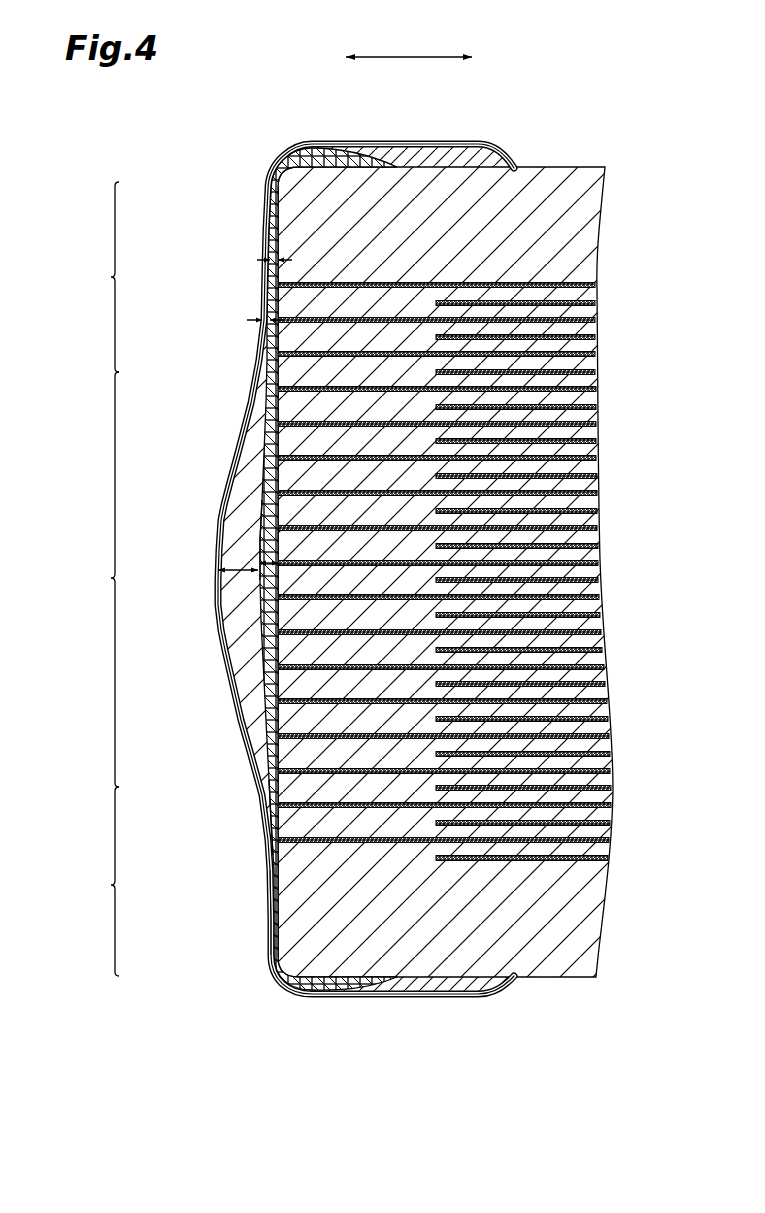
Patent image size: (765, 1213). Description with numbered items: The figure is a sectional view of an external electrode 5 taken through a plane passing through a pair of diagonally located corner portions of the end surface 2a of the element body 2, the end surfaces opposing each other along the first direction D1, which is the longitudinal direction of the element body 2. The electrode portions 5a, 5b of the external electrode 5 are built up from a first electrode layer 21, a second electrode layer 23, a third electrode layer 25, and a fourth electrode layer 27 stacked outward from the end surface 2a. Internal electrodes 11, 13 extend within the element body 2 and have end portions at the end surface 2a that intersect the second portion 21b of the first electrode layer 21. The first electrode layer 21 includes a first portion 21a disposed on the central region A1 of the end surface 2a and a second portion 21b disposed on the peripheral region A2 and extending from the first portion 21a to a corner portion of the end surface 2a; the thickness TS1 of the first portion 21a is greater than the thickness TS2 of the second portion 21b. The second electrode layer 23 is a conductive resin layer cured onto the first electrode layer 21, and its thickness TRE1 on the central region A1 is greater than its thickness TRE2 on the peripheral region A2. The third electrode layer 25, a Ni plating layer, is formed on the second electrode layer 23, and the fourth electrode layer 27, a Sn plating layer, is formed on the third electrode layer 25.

The element body 2 is at (522, 207).
The end surface 2a is at (272, 637).
The external electrode 5 is at (339, 561).
The electrode portion 5a is at (265, 641).
The electrode portion 5b is at (430, 143).
The internal electrode 11 is at (562, 283).
The internal electrode 13 is at (597, 303).
The first electrode layer 21 is at (265, 403).
The first portion 21a is at (270, 542).
The second portion 21b is at (268, 828).
The second electrode layer 23 is at (240, 482).
The third electrode layer 25 is at (272, 911).
The fourth electrode layer 27 is at (274, 948).
The first direction D1 is at (400, 58).
The central region A1 is at (99, 579).
The peripheral region A2 is at (99, 579).
The thickness of the first portion TS1 is at (257, 578).
The thickness of the second portion TS2 is at (262, 244).
The thickness of the second electrode layer on the central region TRE1 is at (237, 567).
The thickness of the second electrode layer on the peripheral region TRE2 is at (264, 280).